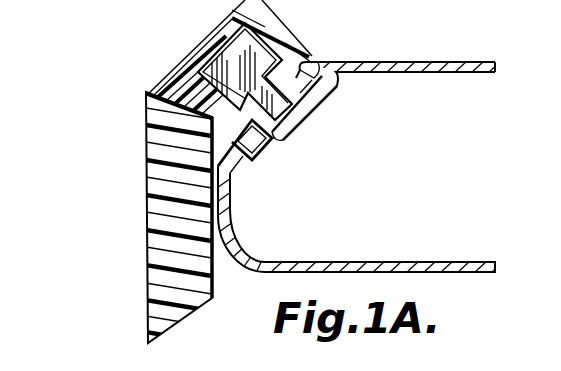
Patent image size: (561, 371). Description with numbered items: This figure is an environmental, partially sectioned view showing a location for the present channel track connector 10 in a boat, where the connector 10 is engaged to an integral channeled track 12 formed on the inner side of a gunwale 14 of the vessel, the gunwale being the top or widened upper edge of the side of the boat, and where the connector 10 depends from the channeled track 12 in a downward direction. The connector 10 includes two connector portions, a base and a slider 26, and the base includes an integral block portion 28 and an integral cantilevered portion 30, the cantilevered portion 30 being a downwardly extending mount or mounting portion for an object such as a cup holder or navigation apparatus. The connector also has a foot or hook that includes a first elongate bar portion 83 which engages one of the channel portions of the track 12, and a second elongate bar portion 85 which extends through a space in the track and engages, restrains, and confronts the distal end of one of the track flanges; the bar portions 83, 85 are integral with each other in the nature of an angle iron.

The channel track connector 10 is at (143, 231).
The integral channeled track 12 is at (305, 135).
The gunwale 14 is at (418, 73).
The slider 26 is at (237, 65).
The integral block portion 28 is at (172, 74).
The integral cantilevered portion 30 is at (144, 153).
The first elongate bar portion 83 is at (258, 172).
The second elongate bar portion 85 is at (264, 150).